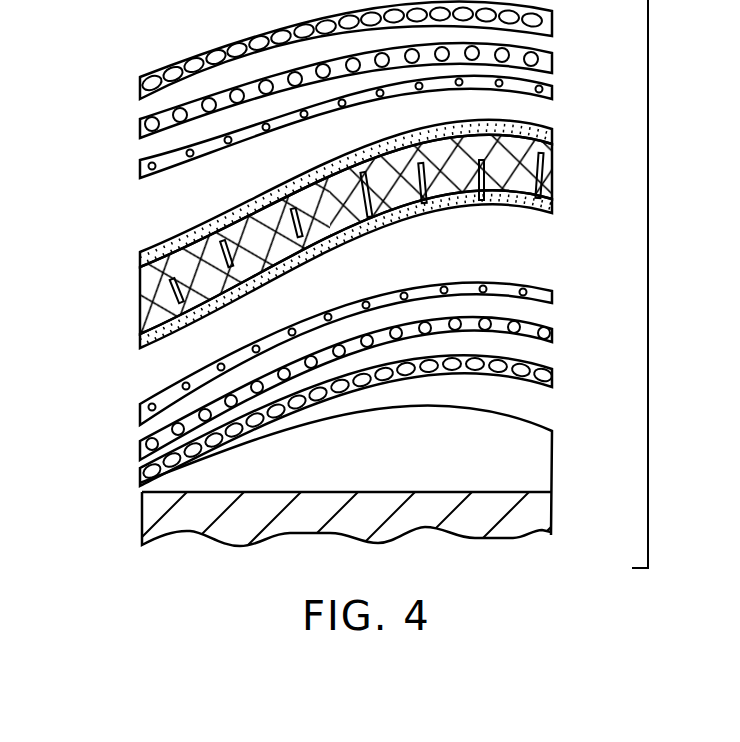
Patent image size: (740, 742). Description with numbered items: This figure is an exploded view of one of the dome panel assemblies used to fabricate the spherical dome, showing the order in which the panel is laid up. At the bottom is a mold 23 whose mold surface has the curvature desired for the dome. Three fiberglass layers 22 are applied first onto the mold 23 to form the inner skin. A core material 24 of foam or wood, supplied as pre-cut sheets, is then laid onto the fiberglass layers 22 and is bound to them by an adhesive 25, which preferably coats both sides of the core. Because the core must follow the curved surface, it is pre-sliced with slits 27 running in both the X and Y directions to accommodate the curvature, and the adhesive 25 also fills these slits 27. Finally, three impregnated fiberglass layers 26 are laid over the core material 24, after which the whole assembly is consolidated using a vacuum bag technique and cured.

The fiberglass layers 22 is at (140, 412).
The mold 23 is at (140, 505).
The core material 24 is at (143, 307).
The adhesive 25 is at (140, 262).
The impregnated fiberglass layers 26 is at (138, 92).
The slits 27 is at (552, 182).